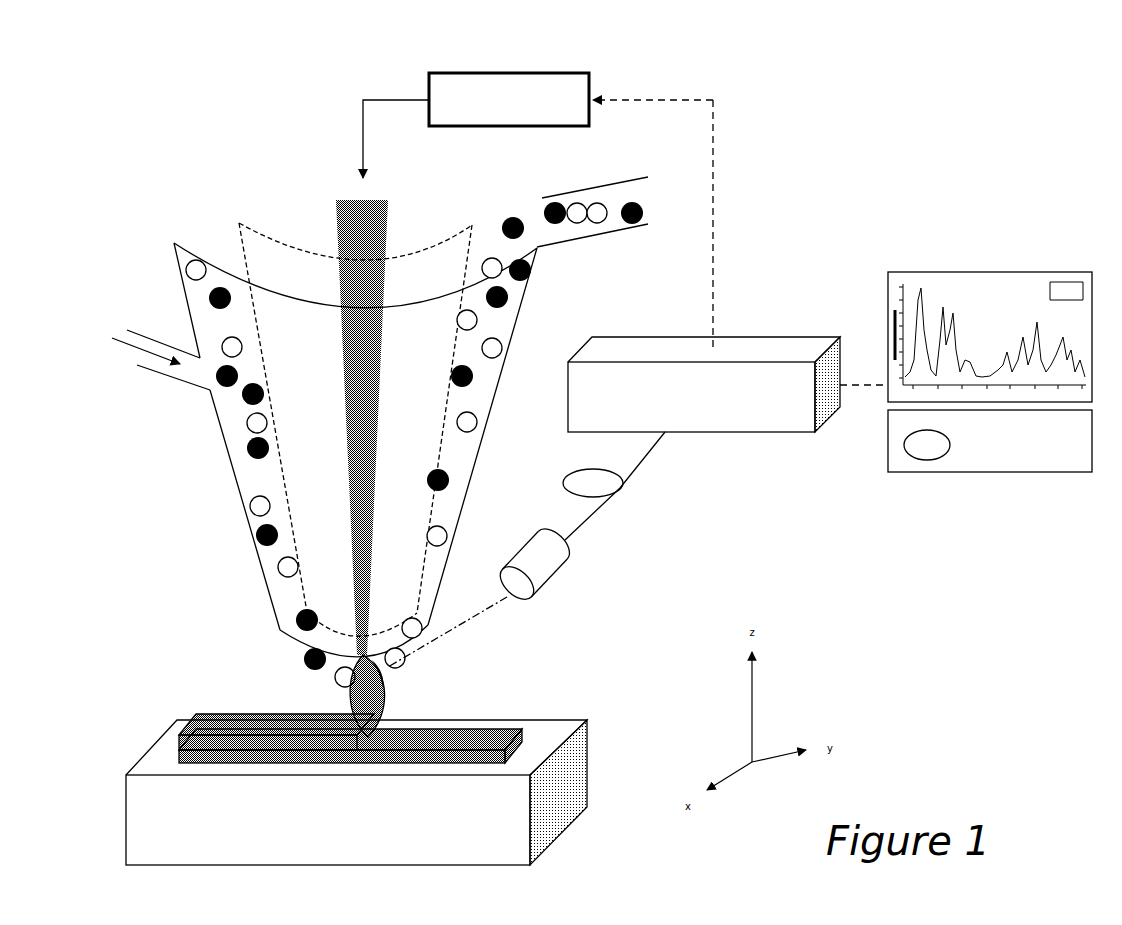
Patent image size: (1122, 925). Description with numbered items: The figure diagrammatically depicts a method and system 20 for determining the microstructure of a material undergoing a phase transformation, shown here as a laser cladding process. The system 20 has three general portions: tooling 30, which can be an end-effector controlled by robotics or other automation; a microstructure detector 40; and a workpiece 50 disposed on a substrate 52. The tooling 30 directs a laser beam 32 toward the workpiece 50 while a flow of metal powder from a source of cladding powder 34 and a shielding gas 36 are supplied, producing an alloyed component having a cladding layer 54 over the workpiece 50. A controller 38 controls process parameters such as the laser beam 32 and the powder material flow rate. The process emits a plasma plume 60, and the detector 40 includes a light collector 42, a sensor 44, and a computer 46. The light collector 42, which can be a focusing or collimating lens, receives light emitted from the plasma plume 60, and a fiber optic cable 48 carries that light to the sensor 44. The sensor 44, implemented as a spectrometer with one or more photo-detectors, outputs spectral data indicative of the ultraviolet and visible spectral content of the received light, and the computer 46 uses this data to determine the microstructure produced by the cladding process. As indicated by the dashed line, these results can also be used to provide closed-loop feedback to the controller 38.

The system 20 is at (117, 55).
The tooling 30 is at (147, 548).
The laser beam 32 is at (388, 222).
The source of cladding powder 34 is at (618, 183).
The shielding gas 36 is at (172, 382).
The controller 38 is at (543, 72).
The microstructure detector 40 is at (916, 195).
The light collector 42 is at (540, 587).
The sensor 44 is at (750, 432).
The computer 46 is at (1015, 473).
The fiber optic cable 48 is at (640, 468).
The workpiece 50 is at (179, 757).
The substrate 52 is at (125, 778).
The cladding layer 54 is at (210, 714).
The plasma plume 60 is at (395, 699).